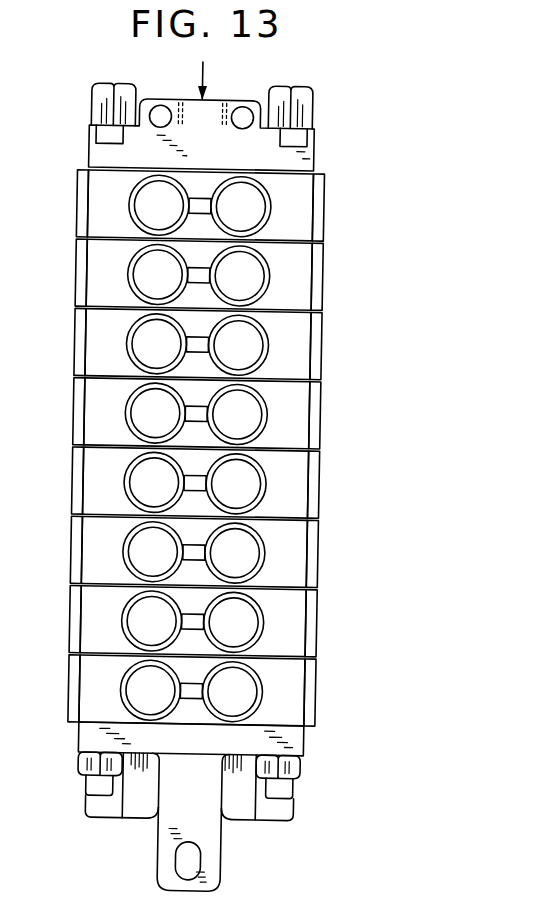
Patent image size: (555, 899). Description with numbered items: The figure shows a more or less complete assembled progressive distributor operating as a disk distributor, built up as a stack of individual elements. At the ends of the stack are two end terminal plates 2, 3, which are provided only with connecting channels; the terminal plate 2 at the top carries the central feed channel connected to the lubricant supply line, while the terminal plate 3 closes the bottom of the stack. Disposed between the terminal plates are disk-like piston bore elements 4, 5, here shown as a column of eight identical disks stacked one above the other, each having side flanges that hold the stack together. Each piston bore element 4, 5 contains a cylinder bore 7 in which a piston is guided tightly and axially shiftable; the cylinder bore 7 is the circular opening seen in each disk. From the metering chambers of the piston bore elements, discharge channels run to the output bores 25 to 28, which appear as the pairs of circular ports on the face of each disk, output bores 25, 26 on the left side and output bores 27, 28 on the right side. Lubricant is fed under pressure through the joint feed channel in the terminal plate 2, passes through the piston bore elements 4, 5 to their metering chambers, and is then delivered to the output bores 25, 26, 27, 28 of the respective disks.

The terminal plate 2 is at (90, 152).
The terminal plate 3 is at (98, 741).
The piston bore element 4 is at (196, 285).
The piston bore element 5 is at (185, 204).
The cylinder bore 7 is at (60, 382).
The output bore 25 is at (139, 205).
The output bore 26 is at (140, 275).
The output bore 27 is at (250, 281).
The output bore 28 is at (246, 186).